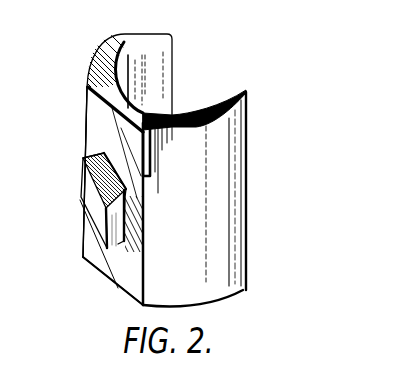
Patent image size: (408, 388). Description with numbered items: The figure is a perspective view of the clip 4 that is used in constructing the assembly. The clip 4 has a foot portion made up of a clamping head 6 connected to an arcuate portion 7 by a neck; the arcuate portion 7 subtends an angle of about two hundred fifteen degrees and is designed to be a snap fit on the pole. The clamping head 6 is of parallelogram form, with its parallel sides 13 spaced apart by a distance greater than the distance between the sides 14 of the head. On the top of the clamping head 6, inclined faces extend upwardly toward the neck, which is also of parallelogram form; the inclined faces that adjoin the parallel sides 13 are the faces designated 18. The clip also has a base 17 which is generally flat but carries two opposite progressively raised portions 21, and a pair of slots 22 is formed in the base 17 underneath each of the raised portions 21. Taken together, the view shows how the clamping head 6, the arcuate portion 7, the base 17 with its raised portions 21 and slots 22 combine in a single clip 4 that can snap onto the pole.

The clip 4 is at (163, 161).
The clamping head 6 is at (91, 205).
The arcuate portion 7 is at (225, 197).
The parallel sides of the head 13 is at (113, 240).
The sides of the head 14 is at (96, 179).
The base 17 is at (130, 255).
The inclined faces 18 is at (103, 152).
The raised portions 21 is at (131, 114).
The slots 22 is at (150, 158).